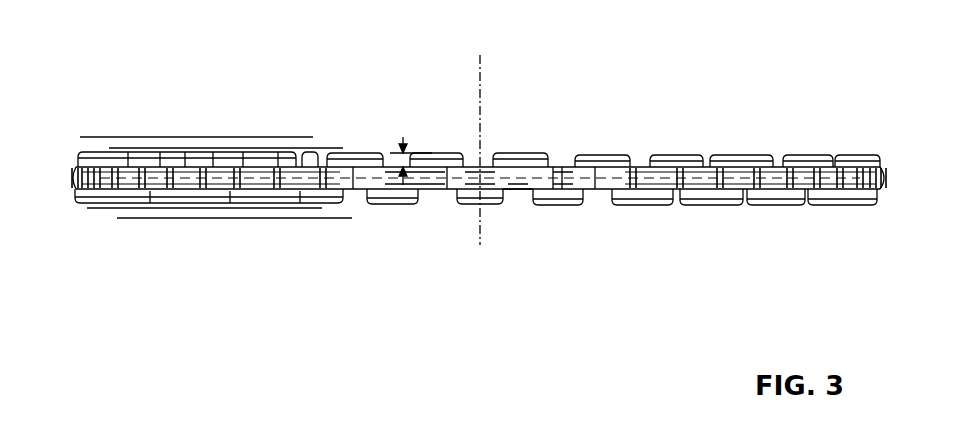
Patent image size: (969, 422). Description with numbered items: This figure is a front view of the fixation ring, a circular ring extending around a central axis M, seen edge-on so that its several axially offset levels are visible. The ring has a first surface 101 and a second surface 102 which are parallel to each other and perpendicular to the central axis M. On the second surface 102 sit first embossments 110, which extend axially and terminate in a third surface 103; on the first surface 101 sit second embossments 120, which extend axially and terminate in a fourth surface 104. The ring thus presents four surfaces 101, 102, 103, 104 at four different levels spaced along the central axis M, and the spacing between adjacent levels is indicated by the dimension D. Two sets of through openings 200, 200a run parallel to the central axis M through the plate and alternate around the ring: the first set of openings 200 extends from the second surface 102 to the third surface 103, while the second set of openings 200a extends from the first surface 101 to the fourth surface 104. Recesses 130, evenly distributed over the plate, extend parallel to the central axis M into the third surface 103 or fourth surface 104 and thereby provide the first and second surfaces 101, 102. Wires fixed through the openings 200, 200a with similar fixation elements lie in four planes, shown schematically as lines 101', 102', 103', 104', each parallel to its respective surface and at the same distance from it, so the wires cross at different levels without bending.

The first set of through openings 200 is at (550, 203).
The second set of through openings 200a is at (437, 150).
The central axis M is at (480, 77).
The offset distance D is at (411, 151).
The second embossments 120 is at (522, 152).
The first surface 101 is at (571, 141).
The fourth surface 104 is at (606, 124).
The first embossments 110 is at (462, 205).
The recesses 130 is at (516, 205).
The second surface 102 is at (568, 227).
The third surface 103 is at (642, 230).
The fourth wire plane 104' is at (196, 111).
The first wire plane 101' is at (226, 116).
The second wire plane 102' is at (204, 245).
The third wire plane 103' is at (234, 250).